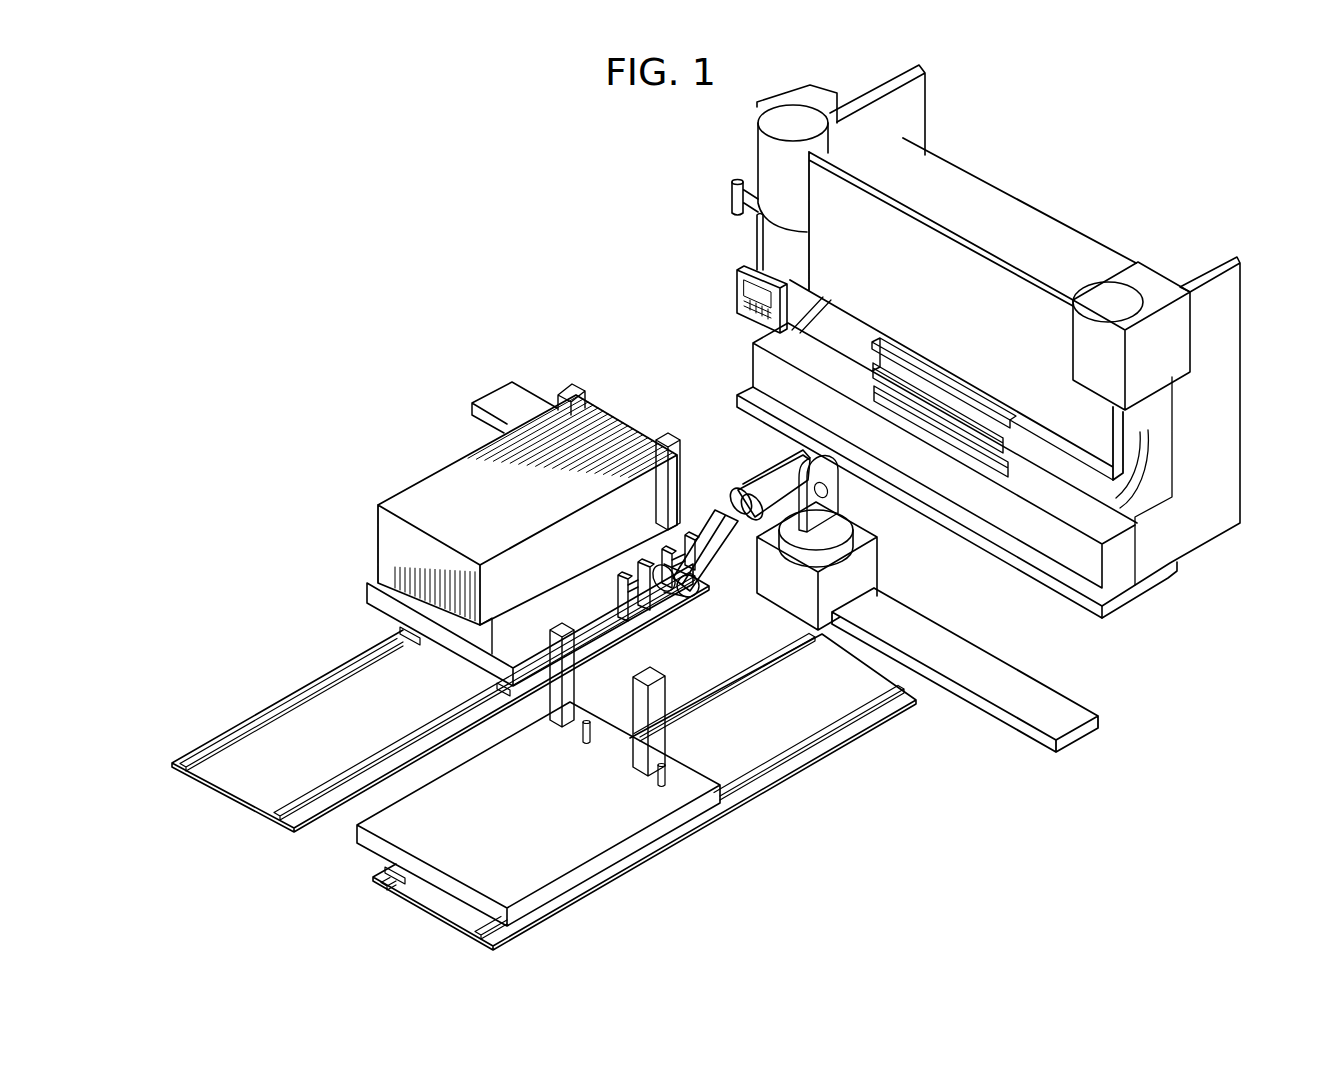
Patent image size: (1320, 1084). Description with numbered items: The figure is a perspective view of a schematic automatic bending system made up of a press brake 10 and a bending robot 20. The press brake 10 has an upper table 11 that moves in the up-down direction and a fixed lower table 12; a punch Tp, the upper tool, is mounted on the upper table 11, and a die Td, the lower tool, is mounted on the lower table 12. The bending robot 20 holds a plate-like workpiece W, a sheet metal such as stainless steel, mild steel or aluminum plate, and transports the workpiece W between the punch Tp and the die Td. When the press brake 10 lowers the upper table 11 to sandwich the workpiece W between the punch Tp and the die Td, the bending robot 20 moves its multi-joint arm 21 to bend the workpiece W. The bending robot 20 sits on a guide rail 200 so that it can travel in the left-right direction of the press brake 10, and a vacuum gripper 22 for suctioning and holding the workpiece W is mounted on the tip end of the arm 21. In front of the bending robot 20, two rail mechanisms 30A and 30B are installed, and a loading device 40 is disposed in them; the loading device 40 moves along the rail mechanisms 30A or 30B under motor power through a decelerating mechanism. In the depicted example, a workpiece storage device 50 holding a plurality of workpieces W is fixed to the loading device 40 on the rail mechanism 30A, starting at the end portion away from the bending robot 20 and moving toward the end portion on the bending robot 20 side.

The press brake 10 is at (942, 176).
The upper table 11 is at (1032, 303).
The lower table 12 is at (1087, 558).
The punch Tp is at (940, 382).
The die Td is at (928, 405).
The bending robot 20 is at (880, 560).
The multi-joint arm 21 is at (786, 474).
The vacuum gripper 22 is at (653, 600).
The workpiece W is at (637, 500).
The loading device 40 is at (367, 586).
The workpiece storage device 50 is at (488, 640).
The rail mechanism 30A is at (258, 795).
The rail mechanism 30B is at (548, 907).
The guide rail 200 is at (1028, 690).